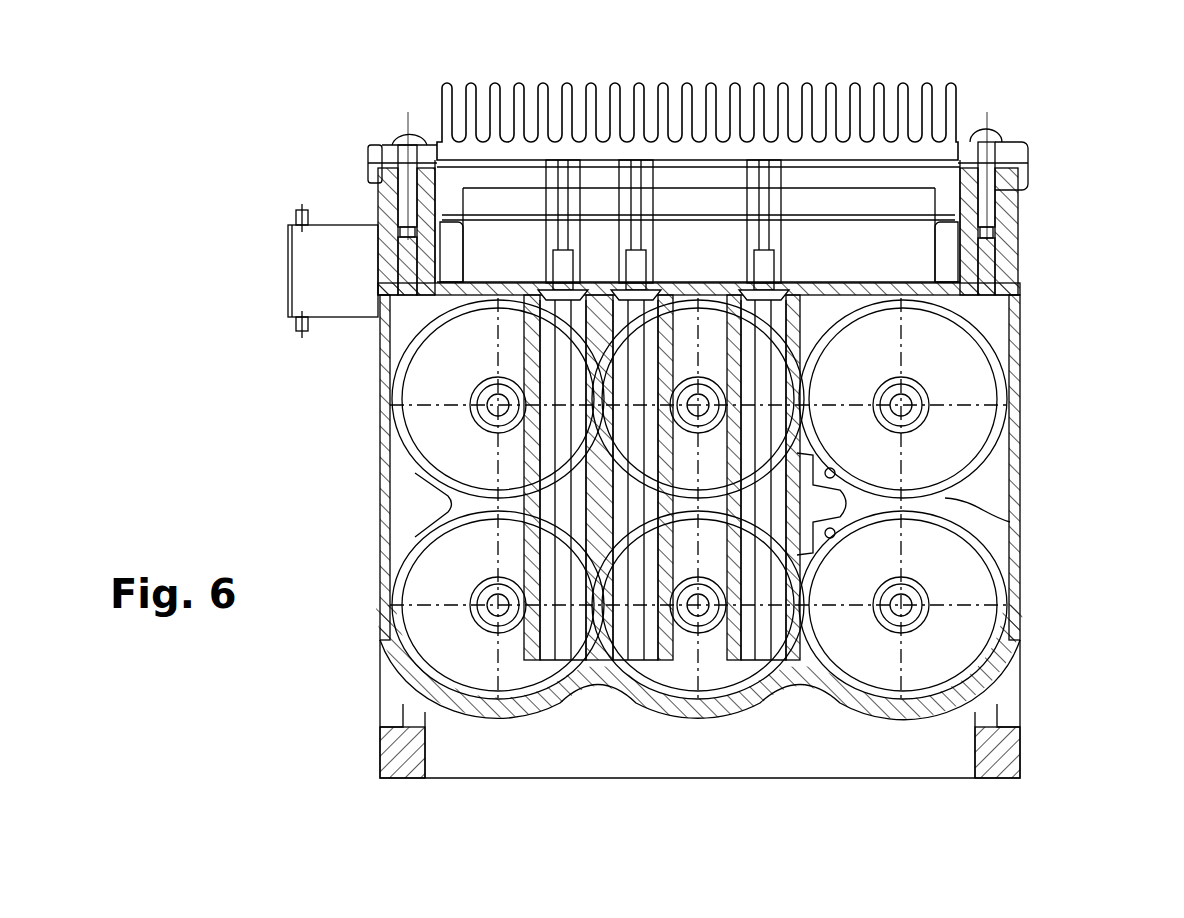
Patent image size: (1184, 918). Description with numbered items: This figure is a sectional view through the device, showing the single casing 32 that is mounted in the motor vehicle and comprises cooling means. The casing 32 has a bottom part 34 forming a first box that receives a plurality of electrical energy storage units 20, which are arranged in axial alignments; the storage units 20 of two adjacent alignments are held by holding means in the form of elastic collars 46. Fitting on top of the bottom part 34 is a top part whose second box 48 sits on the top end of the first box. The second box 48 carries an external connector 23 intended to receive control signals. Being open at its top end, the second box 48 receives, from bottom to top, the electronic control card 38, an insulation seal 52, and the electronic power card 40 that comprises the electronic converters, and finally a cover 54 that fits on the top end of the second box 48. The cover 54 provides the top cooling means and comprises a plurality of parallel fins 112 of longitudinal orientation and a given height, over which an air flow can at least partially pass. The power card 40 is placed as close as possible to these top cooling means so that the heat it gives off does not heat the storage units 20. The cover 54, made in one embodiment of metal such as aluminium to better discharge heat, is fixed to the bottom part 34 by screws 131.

The electrical energy storage unit 20 is at (700, 499).
The connector 23 is at (345, 297).
The casing 32 is at (1022, 438).
The bottom part 34 is at (703, 757).
The electronic control card 38 is at (480, 224).
The electronic power card 40 is at (492, 160).
The elastic collar 46 is at (1021, 525).
The second box 48 is at (943, 246).
The insulation seal 52 is at (1024, 163).
The cover 54 is at (737, 80).
The fins 112 is at (636, 250).
The screws 131 is at (993, 132).